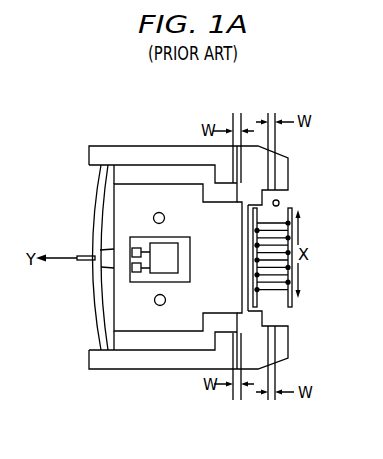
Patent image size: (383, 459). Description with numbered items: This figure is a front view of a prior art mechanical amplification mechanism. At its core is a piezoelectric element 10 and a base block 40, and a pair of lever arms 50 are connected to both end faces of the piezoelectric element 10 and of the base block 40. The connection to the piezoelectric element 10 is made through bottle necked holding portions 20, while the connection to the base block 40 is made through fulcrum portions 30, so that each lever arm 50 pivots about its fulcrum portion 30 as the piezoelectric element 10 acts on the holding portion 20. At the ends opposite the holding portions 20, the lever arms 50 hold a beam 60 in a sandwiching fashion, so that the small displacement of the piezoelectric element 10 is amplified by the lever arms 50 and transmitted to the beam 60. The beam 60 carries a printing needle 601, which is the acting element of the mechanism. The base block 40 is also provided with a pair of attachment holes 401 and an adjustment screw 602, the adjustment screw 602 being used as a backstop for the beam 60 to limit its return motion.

The piezoelectric element 10 is at (282, 298).
The bottle necked holding portions 20 is at (280, 202).
The fulcrum portions 30 is at (239, 192).
The base block 40 is at (137, 190).
The lever arms 50 is at (259, 144).
The beam 60 is at (96, 189).
The printing needle 601 is at (78, 256).
The adjustment screw 602 is at (168, 270).
The mounting holes 401 is at (165, 219).